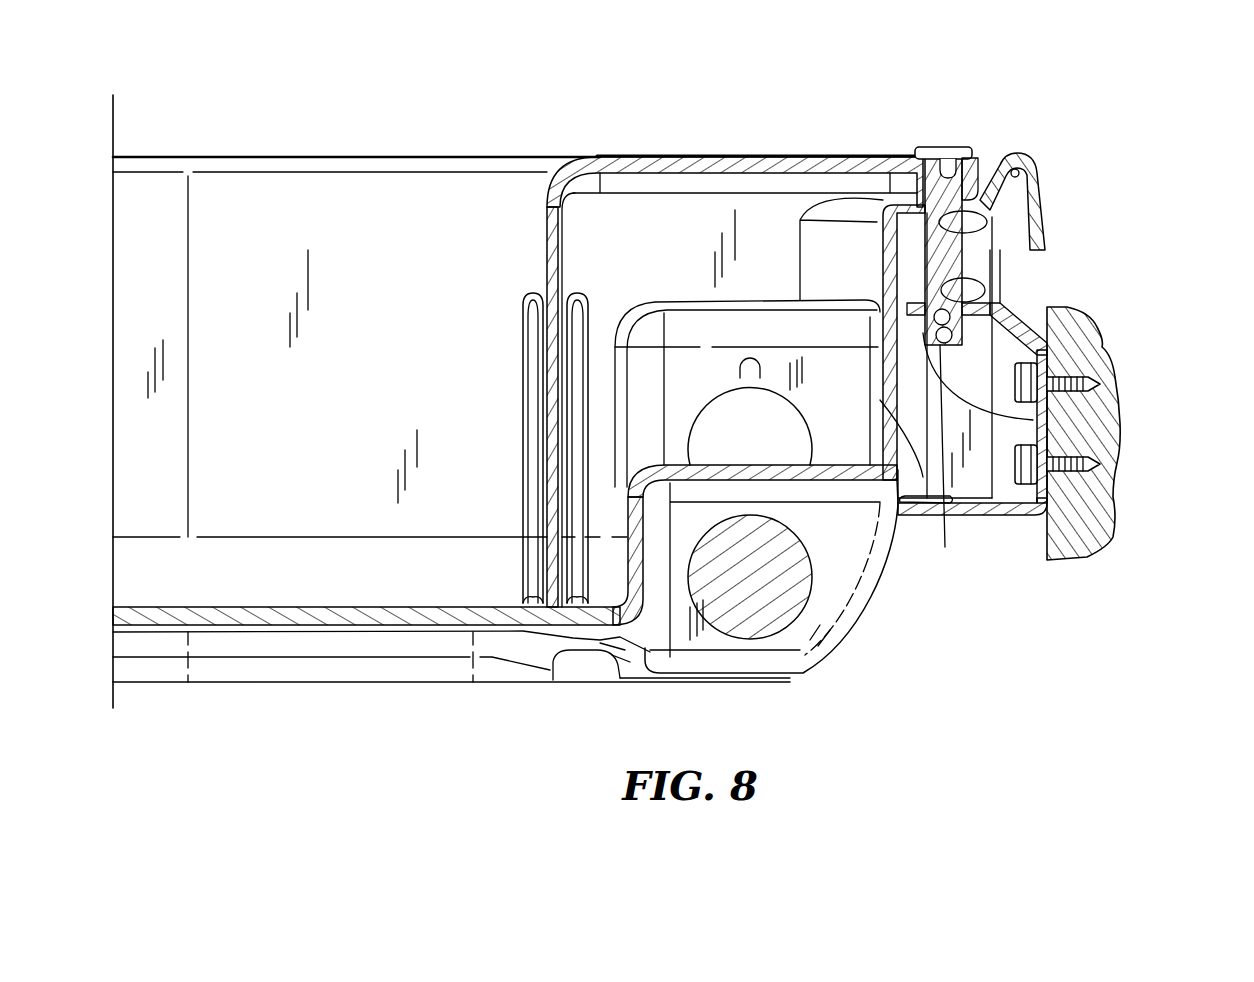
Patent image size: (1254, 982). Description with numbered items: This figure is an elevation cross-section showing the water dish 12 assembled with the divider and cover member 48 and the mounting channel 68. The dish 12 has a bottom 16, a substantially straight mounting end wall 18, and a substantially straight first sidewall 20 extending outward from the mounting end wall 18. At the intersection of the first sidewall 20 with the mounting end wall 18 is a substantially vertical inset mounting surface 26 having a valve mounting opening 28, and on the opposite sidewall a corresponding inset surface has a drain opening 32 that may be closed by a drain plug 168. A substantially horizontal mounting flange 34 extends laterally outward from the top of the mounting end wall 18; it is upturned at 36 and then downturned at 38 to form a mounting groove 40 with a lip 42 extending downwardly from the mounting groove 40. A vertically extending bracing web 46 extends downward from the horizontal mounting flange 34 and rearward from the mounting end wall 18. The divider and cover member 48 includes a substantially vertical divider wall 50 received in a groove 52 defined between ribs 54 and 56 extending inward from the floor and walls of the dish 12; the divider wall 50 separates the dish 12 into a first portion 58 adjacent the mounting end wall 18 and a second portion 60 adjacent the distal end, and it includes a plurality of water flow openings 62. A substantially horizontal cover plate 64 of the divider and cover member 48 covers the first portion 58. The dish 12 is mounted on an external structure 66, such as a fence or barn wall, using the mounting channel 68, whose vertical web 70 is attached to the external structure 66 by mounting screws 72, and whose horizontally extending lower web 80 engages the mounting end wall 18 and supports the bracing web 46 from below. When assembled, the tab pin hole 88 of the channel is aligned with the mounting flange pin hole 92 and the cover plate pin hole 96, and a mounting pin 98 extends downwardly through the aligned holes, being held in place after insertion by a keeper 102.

The dish 12 is at (154, 150).
The bottom 16 is at (313, 620).
The mounting end wall 18 is at (880, 520).
The first sidewall 20 is at (231, 200).
The inset mounting surface 26 is at (706, 366).
The valve mounting opening 28 is at (775, 426).
The drain opening 32 is at (688, 583).
The horizontal mounting flange 34 is at (915, 165).
The upturn 36 is at (984, 185).
The downturn 38 is at (1037, 163).
The mounting groove 40 is at (1018, 168).
The lip 42 is at (1043, 210).
The second bracing web 46 is at (1053, 433).
The divider and cover member 48 is at (613, 158).
The divider wall 50 is at (549, 243).
The groove 52 is at (545, 597).
The rib 54 is at (540, 600).
The rib 56 is at (578, 603).
The first portion 58 is at (624, 270).
The second portion 60 is at (300, 419).
The water flow openings 62 is at (549, 507).
The cover plate 64 is at (778, 157).
The external structure 66 is at (1085, 532).
The mounting channel 68 is at (1069, 458).
The vertical web 70 is at (1042, 405).
The mounting screws 72 is at (1095, 368).
The lower web 80 is at (980, 512).
The tab pin hole 88 is at (987, 289).
The mounting flange pin hole 92 is at (985, 232).
The cover plate pin hole 96 is at (948, 158).
The mounting pin 98 is at (938, 187).
The keeper 102 is at (977, 427).
The drain plug 168 is at (790, 583).